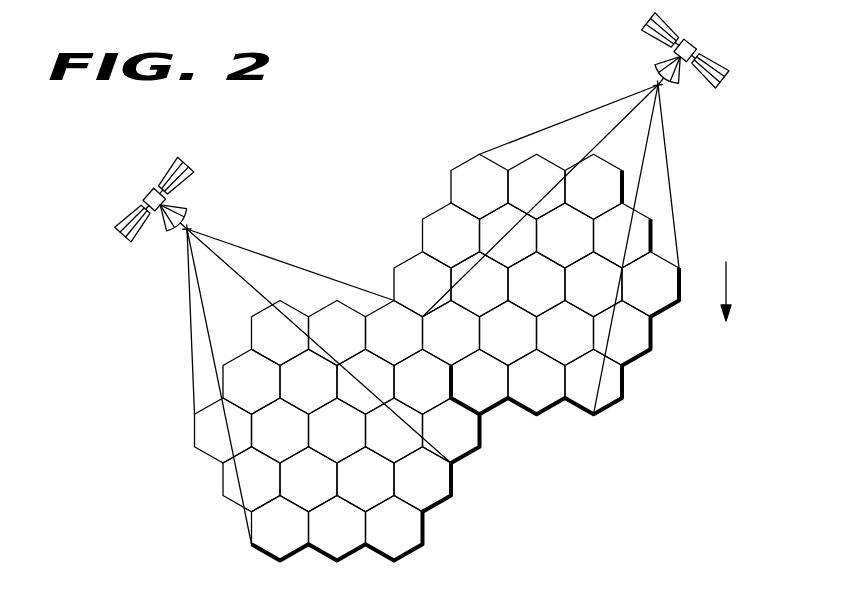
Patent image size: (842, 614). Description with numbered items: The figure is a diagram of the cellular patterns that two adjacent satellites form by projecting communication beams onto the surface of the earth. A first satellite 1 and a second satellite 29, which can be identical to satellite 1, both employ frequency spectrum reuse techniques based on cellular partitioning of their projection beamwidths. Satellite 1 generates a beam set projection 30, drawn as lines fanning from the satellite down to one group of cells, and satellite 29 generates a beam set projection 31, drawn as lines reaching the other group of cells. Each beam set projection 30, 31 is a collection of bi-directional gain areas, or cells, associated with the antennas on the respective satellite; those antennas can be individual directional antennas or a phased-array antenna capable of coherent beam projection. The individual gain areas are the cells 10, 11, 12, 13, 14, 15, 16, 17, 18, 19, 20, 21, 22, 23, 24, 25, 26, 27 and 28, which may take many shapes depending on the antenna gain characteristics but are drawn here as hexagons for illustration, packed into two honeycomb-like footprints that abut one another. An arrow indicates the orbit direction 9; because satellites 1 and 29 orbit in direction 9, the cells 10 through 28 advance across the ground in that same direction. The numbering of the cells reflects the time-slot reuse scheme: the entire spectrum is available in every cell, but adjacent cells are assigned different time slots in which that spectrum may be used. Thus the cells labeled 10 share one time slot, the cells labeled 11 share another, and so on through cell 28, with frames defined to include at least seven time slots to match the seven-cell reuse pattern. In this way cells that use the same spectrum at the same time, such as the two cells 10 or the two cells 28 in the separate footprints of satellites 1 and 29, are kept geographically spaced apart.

The satellite 1 is at (143, 187).
The satellite 29 is at (697, 38).
The beam set projection 30 is at (225, 242).
The beam set projection 31 is at (630, 115).
The orbit direction 9 is at (727, 284).
The cell 10 is at (266, 346).
The cell 11 is at (323, 346).
The cell 12 is at (380, 346).
The cell 13 is at (266, 394).
The cell 14 is at (294, 394).
The cell 15 is at (380, 394).
The cell 16 is at (408, 394).
The cell 17 is at (209, 443).
The cell 18 is at (266, 443).
The cell 19 is at (323, 443).
The cell 20 is at (380, 443).
The cell 21 is at (437, 443).
The cell 22 is at (266, 492).
The cell 23 is at (294, 492).
The cell 24 is at (380, 492).
The cell 25 is at (408, 492).
The cell 26 is at (266, 540).
The cell 27 is at (323, 540).
The cell 28 is at (380, 540).